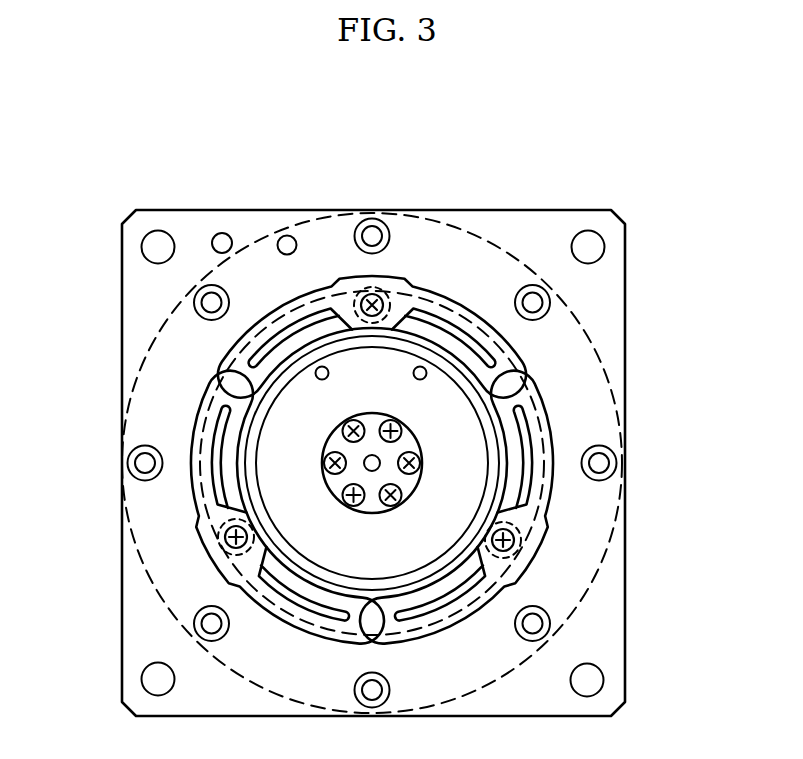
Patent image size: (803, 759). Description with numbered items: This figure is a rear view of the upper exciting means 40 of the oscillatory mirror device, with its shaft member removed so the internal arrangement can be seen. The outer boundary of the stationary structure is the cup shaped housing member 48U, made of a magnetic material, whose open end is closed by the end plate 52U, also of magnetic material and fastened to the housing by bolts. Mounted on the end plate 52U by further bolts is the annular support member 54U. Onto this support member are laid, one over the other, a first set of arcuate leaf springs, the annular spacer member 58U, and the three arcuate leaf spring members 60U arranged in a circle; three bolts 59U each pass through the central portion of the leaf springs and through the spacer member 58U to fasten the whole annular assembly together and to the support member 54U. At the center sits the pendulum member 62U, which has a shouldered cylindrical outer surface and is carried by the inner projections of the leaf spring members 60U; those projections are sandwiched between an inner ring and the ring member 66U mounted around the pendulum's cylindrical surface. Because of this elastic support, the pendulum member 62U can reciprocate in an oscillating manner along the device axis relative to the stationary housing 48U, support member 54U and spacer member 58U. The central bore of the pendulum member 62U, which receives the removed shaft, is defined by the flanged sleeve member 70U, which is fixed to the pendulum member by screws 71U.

The upper exciting means 40 is at (571, 207).
The cup shaped housing member 48U is at (163, 323).
The end plate 52U is at (627, 301).
The annular support member 54U is at (453, 613).
The annular spacer member 58U is at (389, 296).
The bolts 59U is at (361, 299).
The arcuate leaf spring members 60U is at (272, 306).
The pendulum member 62U is at (275, 410).
The ring member 66U is at (388, 592).
The sleeve member 70U is at (421, 477).
The screws 71U is at (506, 402).